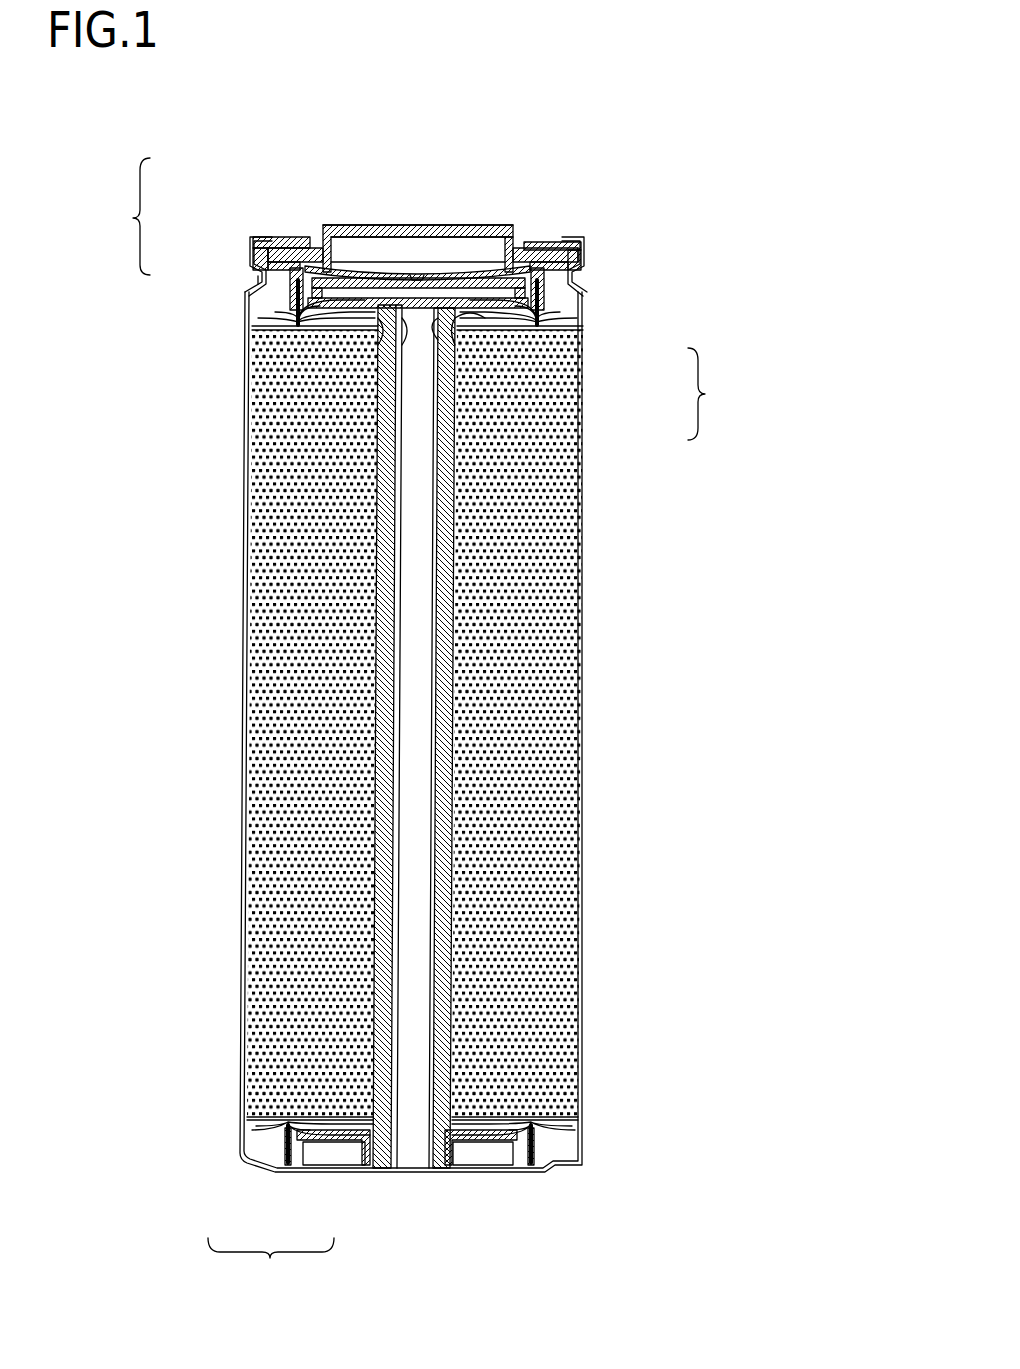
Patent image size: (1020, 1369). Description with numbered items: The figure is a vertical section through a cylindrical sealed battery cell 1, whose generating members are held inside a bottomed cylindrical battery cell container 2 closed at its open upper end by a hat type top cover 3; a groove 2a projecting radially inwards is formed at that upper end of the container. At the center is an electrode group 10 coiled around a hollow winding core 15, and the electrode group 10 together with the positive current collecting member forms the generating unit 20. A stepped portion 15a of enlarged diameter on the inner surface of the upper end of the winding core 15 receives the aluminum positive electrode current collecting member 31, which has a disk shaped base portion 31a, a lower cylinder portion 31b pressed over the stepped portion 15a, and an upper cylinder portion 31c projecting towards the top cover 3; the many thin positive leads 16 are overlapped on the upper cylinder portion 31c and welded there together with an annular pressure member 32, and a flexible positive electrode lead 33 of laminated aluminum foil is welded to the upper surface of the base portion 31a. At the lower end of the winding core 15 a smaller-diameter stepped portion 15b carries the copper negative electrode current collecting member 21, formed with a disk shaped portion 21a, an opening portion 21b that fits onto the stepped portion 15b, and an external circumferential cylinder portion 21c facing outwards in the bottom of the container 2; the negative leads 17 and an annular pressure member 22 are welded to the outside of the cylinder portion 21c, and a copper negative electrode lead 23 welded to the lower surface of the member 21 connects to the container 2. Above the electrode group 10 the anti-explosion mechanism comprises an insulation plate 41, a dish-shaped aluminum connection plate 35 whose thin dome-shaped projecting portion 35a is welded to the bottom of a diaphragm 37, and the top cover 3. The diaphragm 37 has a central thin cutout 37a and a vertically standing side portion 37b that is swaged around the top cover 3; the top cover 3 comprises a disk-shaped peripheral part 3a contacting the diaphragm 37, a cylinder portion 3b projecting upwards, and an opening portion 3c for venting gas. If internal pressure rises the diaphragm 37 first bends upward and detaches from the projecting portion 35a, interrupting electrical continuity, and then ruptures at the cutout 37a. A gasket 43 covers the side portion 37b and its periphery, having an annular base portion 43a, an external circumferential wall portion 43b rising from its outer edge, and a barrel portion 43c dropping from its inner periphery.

The cylindrical sealed battery cell 1 is at (797, 202).
The battery cell container 2 is at (585, 830).
The groove 2a is at (575, 279).
The top cover 3 is at (350, 225).
The peripheral part 3a is at (582, 259).
The cylinder portion 3b is at (363, 228).
The opening portion 3c is at (385, 228).
The electrode group 10 is at (540, 700).
The winding core 15 is at (393, 1123).
The stepped portion 15a is at (388, 358).
The stepped portion 15b is at (373, 1168).
The positive leads 16 is at (300, 326).
The negative leads 17 is at (552, 1112).
The generating unit 20 is at (556, 607).
The negative electrode current collecting member 21 is at (376, 1207).
The disk shaped portion 21a is at (325, 1133).
The opening portion 21b is at (367, 1170).
The external circumferential cylinder portion 21c is at (298, 1163).
The annular pressure member 22 is at (280, 1153).
The negative electrode lead 23 is at (455, 1157).
The positive electrode current collecting member 31 is at (528, 387).
The base portion 31a is at (442, 355).
The lower cylinder portion 31b is at (450, 380).
The upper cylinder portion 31c is at (478, 325).
The annular pressure member 32 is at (547, 293).
The positive electrode lead 33 is at (450, 415).
The connection plate 35 is at (505, 268).
The projecting portion 35a is at (425, 270).
The diaphragm 37 is at (400, 255).
The cutout 37a is at (470, 248).
The side portion 37b is at (568, 243).
The insulation plate 41 is at (300, 296).
The gasket 43 is at (338, 220).
The annular base portion 43a is at (273, 240).
The external circumferential wall portion 43b is at (268, 256).
The barrel portion 43c is at (277, 262).